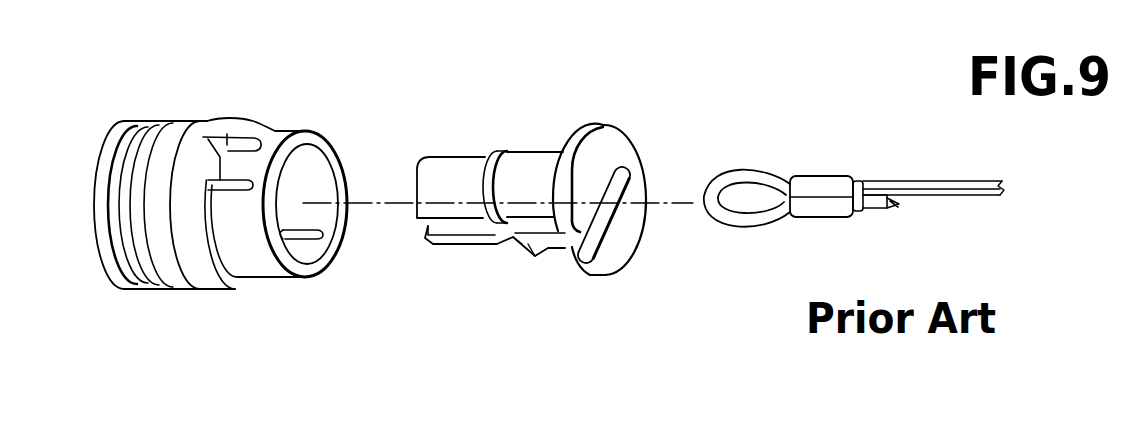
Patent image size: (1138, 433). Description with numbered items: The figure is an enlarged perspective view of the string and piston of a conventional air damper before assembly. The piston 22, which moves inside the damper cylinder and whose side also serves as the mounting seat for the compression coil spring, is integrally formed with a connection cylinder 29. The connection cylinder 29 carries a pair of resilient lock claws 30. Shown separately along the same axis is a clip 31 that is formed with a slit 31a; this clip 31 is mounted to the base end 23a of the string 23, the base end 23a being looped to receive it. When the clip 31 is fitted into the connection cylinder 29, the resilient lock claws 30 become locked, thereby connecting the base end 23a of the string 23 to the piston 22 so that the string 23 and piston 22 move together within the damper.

The piston 22 is at (190, 253).
The connection cylinder 29 is at (251, 253).
The resilient lock claws 30 is at (237, 162).
The clip 31 is at (606, 143).
The slit 31a is at (467, 224).
The string 23 is at (932, 192).
The base end of the string 23a is at (734, 170).